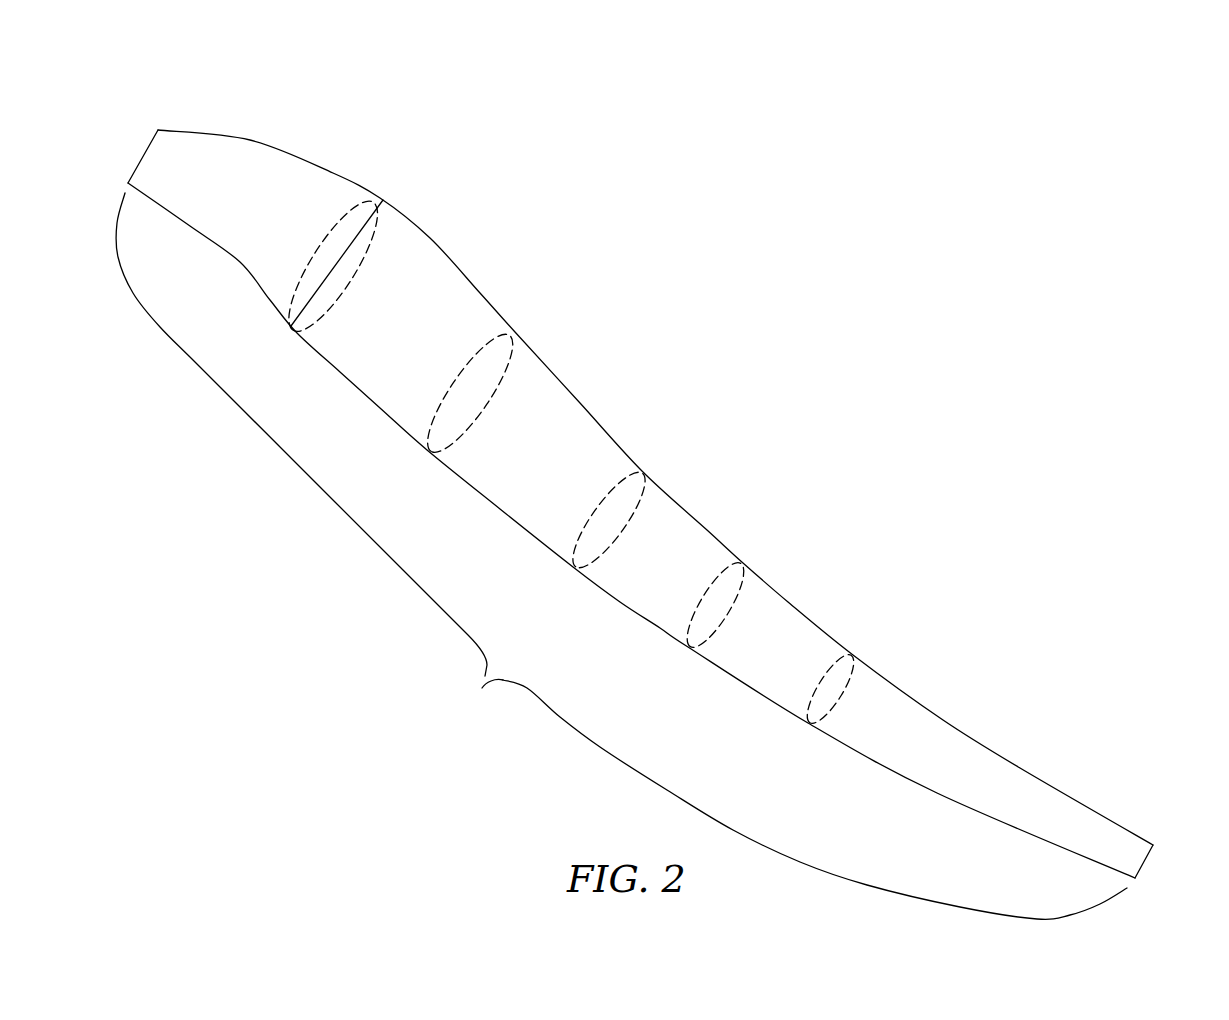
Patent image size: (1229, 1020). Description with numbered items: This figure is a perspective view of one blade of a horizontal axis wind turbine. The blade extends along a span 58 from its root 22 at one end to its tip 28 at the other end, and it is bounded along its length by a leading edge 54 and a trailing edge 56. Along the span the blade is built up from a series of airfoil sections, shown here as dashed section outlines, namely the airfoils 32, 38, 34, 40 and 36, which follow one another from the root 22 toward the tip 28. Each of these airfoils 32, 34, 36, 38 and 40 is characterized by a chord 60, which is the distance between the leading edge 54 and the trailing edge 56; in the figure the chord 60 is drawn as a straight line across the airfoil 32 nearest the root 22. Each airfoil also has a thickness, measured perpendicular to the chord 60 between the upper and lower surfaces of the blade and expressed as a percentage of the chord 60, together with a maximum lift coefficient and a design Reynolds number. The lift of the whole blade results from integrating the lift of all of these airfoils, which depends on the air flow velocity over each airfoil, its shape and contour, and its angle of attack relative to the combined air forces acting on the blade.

The root 22 is at (200, 130).
The tip 28 is at (1148, 858).
The airfoil 32 is at (378, 218).
The airfoil 34 is at (637, 498).
The airfoil 36 is at (853, 670).
The airfoil 38 is at (512, 345).
The airfoil 40 is at (742, 565).
The leading edge 54 is at (917, 782).
The trailing edge 56 is at (788, 602).
The span 58 is at (482, 688).
The chord 60 is at (358, 232).